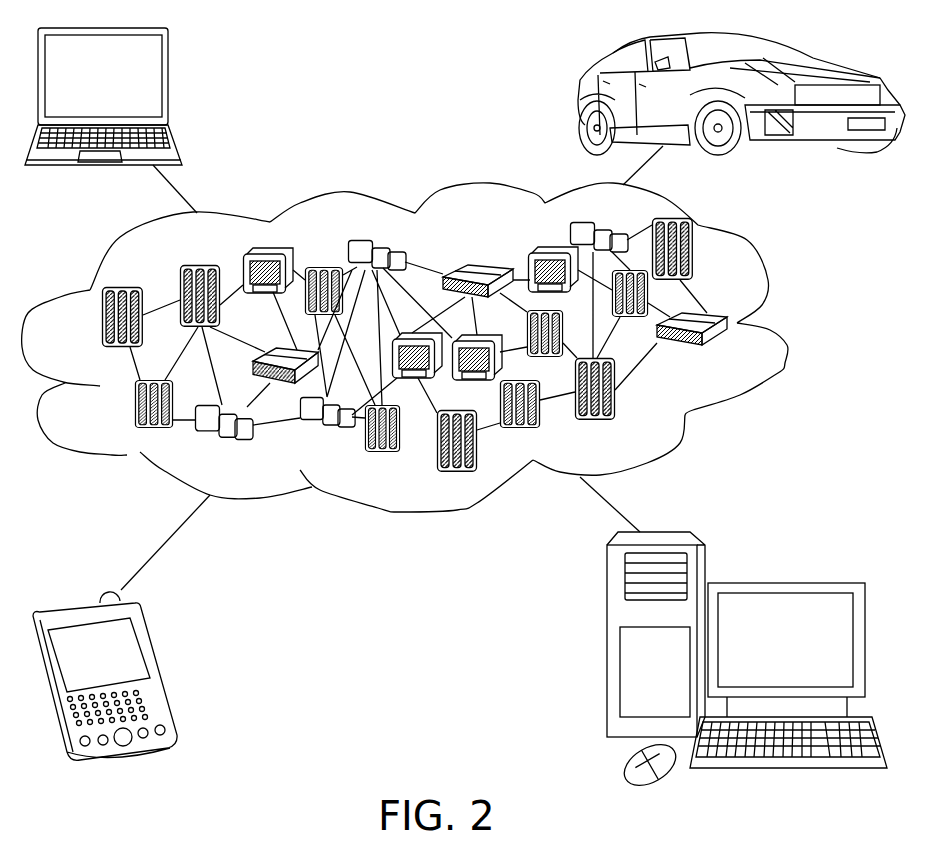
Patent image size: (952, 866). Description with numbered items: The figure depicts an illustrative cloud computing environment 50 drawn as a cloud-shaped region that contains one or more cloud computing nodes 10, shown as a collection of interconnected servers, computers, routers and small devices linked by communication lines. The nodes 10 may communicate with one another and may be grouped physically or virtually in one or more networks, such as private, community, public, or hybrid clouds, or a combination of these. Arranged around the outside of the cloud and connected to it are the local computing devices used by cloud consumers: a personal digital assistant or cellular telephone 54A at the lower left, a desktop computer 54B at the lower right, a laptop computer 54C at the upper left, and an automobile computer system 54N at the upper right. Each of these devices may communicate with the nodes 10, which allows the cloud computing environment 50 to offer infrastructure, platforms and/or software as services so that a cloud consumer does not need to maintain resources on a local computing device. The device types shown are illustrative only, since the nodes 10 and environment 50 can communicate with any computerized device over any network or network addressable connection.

The cloud computing node 10 is at (463, 411).
The cloud computing environment 50 is at (786, 327).
The personal digital assistant (PDA) or cellular telephone 54A is at (160, 667).
The desktop computer 54B is at (783, 583).
The laptop computer 54C is at (168, 80).
The automobile computer system 54N is at (577, 95).